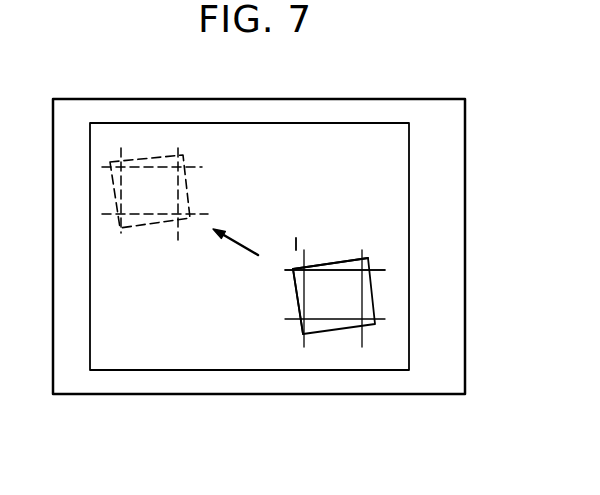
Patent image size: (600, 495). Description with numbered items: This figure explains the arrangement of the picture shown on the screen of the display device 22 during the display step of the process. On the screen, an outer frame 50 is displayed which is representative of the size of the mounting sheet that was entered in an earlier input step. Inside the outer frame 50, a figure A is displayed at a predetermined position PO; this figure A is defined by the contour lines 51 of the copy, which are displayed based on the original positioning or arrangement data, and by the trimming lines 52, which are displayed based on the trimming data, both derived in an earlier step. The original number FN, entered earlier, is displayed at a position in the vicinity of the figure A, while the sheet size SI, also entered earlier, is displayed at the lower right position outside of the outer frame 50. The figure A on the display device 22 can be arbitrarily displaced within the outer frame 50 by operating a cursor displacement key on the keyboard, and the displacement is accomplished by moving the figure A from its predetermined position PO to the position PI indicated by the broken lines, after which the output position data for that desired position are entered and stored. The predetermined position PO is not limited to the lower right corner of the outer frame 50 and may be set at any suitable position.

The display device 22 is at (448, 210).
The outer frame 50 is at (409, 288).
The contour lines 51 is at (335, 262).
The trimming lines 52 is at (380, 270).
The original number FN is at (294, 236).
The figure A is at (287, 301).
The position indicated by broken lines PI is at (155, 194).
The predetermined position PO is at (335, 298).
The sheet size SI is at (372, 382).